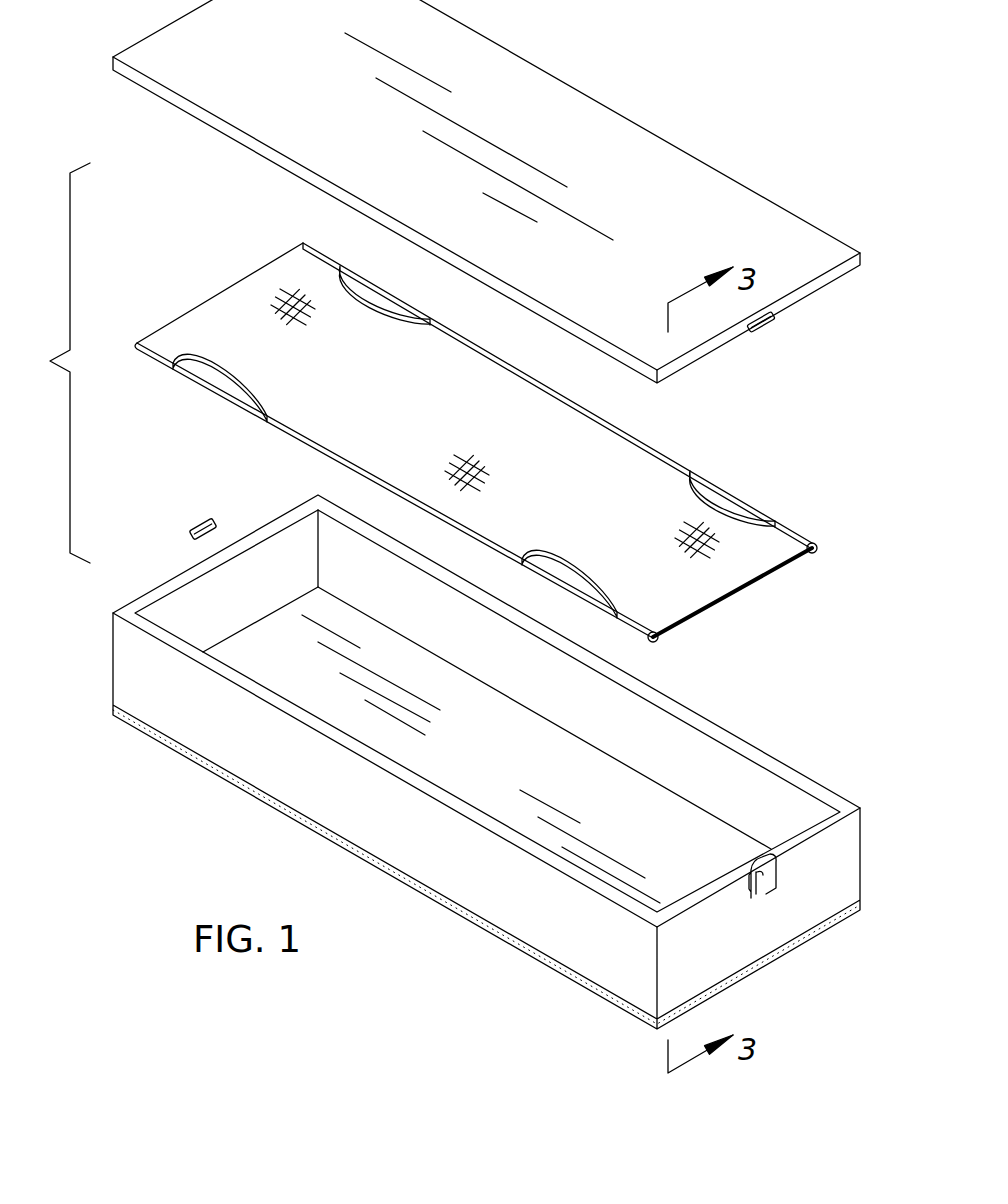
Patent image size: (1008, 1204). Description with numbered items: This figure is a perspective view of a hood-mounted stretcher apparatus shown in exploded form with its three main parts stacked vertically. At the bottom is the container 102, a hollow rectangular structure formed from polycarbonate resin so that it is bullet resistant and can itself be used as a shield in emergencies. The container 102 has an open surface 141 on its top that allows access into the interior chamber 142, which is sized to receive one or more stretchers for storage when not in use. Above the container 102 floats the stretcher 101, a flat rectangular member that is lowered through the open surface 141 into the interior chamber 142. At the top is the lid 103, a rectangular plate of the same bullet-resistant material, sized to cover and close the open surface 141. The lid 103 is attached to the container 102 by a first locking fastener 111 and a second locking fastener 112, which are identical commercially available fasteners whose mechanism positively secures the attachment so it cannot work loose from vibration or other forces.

The stretcher 101 is at (747, 558).
The container 102 is at (487, 762).
The lid 103 is at (715, 200).
The first locking fastener 111 is at (767, 323).
The second locking fastener 112 is at (197, 526).
The open surface 141 is at (723, 772).
The interior chamber 142 is at (328, 695).